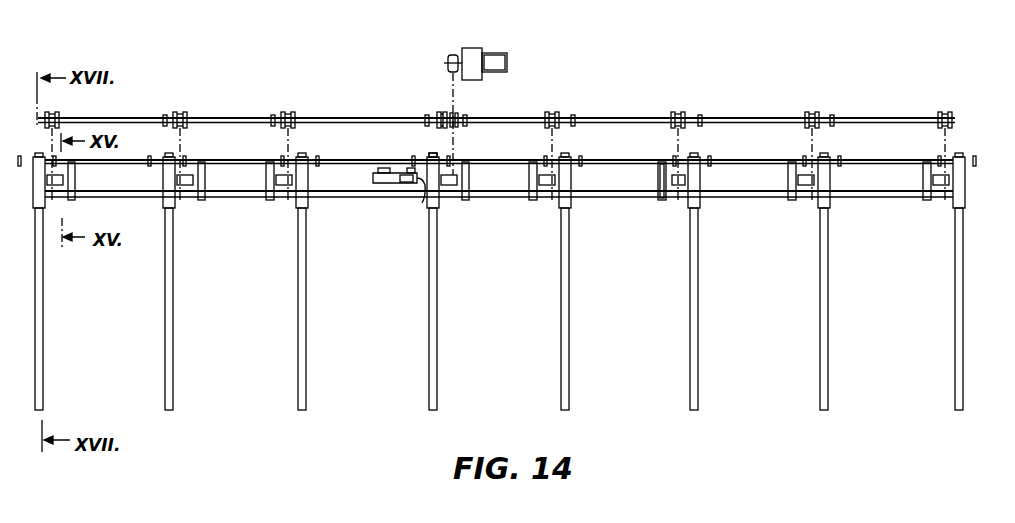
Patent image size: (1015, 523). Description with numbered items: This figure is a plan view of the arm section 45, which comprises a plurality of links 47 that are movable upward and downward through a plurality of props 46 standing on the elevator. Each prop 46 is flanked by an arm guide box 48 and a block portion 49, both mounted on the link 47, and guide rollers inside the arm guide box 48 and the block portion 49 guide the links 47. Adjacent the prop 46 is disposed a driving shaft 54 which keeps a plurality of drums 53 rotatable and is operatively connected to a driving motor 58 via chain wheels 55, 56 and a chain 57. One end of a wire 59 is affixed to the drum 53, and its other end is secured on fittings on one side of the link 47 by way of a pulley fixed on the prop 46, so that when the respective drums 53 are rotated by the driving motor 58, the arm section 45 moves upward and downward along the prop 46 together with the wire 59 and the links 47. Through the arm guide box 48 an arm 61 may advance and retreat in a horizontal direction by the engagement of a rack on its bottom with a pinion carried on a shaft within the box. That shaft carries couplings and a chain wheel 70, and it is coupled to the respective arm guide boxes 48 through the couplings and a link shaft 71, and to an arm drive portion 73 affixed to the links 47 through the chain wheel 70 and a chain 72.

The arm section 45 is at (628, 114).
The prop 46 is at (668, 162).
The link 47 is at (619, 198).
The arm guide box 48 is at (700, 205).
The block portion 49 is at (656, 185).
The drum 53 is at (440, 112).
The driving shaft 54 is at (360, 98).
The chain wheel 55 is at (458, 126).
The chain wheel 56 is at (447, 60).
The chain 57 is at (456, 97).
The driving motor 58 is at (494, 49).
The wire 59 is at (436, 140).
The arm 61 is at (438, 323).
The chain wheel 70 is at (425, 156).
The link shaft 71 is at (333, 158).
The chain 72 is at (437, 188).
The arm drive portion 73 is at (373, 178).